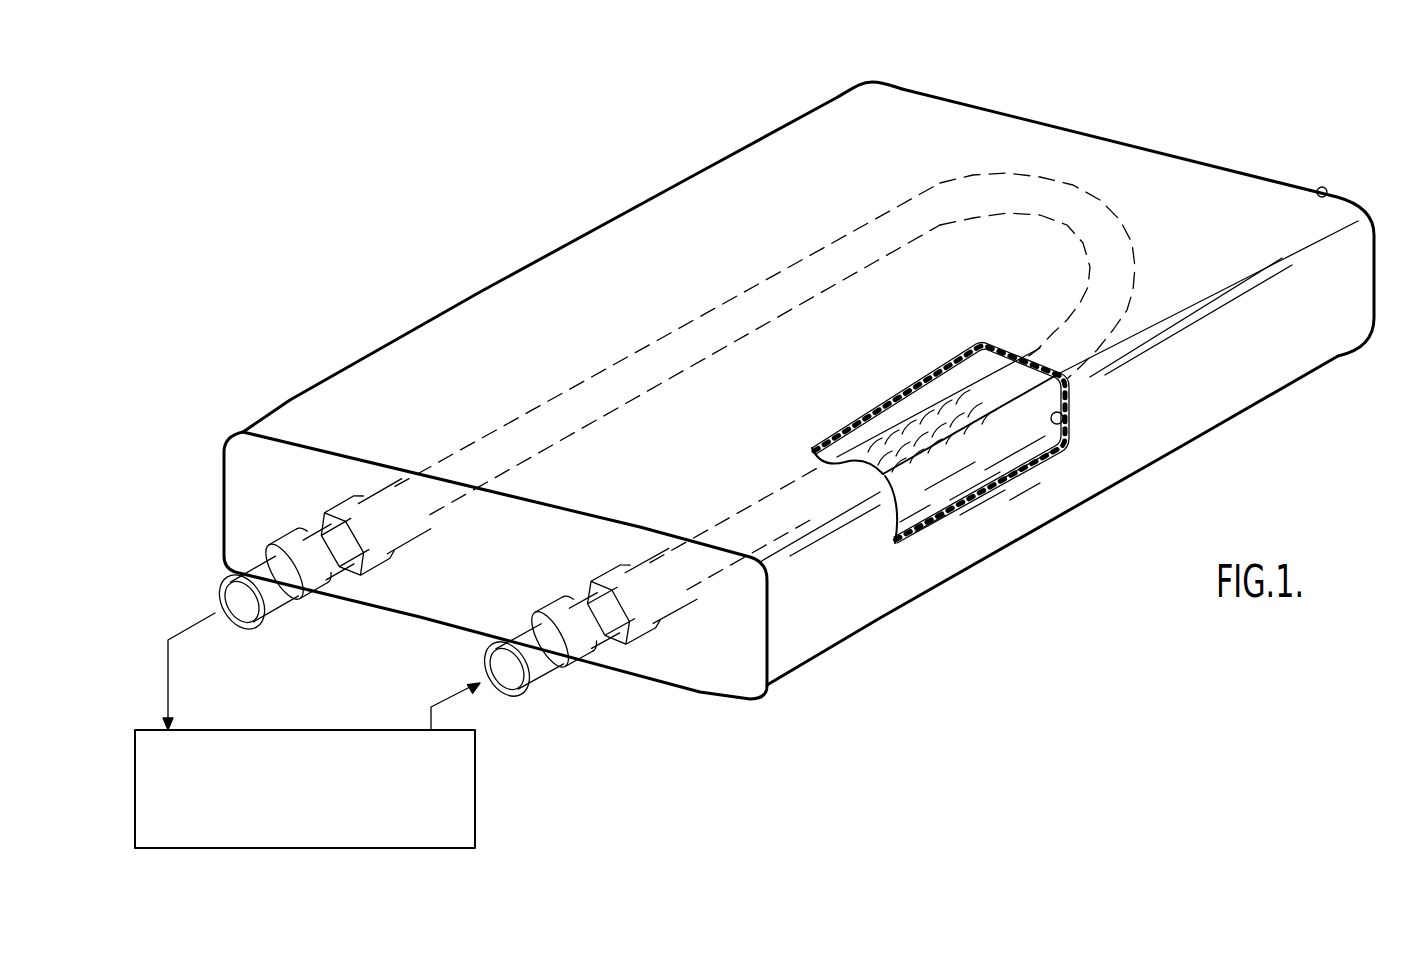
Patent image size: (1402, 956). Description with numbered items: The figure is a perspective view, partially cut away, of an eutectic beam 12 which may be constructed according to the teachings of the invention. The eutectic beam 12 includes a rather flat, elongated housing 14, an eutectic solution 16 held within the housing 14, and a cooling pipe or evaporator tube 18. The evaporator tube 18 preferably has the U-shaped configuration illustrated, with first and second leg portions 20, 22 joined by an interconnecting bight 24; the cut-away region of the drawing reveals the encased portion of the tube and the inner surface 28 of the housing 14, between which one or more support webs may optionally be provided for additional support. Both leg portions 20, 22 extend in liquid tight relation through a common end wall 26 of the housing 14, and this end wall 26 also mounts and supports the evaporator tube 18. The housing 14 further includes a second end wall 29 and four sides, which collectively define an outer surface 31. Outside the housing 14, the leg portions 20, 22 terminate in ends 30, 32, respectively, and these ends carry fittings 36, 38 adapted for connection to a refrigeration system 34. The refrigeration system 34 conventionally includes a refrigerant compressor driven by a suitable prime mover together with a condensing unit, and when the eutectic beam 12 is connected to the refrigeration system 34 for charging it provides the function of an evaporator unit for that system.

The eutectic beam 12 is at (792, 84).
The housing 14 is at (1190, 424).
The eutectic solution 16 is at (1017, 443).
The evaporator tube 18 is at (867, 447).
The first leg portion 20 is at (722, 303).
The second leg portion 22 is at (923, 420).
The interconnecting bight 24 is at (1135, 241).
The common end wall 26 is at (717, 655).
The inner surface 28 is at (1073, 415).
The second end wall 29 is at (1317, 195).
The end 30 is at (208, 607).
The outer surface 31 is at (706, 186).
The end 32 is at (470, 664).
The refrigeration system 34 is at (477, 795).
The fitting 36 is at (310, 593).
The fitting 38 is at (587, 660).